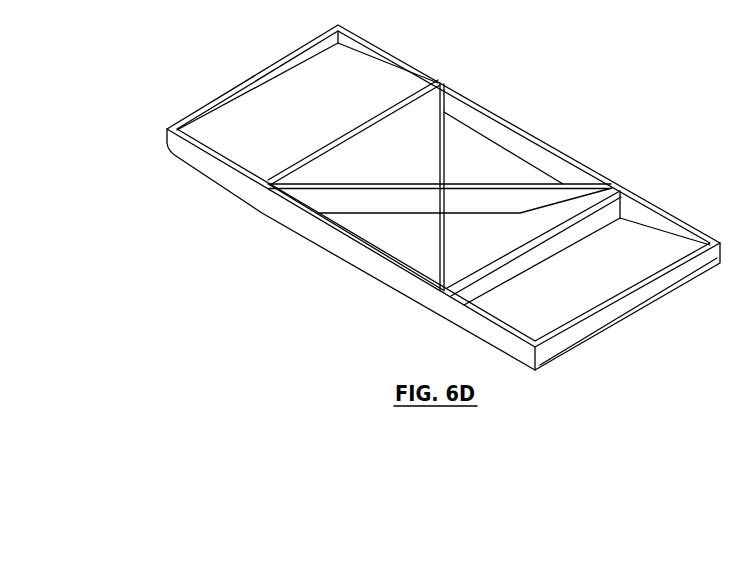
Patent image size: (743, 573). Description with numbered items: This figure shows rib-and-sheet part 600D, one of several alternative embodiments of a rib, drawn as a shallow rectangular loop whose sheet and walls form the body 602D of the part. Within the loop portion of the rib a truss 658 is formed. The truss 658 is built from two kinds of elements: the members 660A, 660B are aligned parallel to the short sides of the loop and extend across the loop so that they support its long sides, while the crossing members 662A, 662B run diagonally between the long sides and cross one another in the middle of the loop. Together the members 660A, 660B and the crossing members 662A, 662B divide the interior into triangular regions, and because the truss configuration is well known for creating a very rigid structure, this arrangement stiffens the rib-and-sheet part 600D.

The rib-and-sheet part 600D is at (543, 121).
The tray base 602D is at (297, 218).
The truss 658 is at (470, 154).
The member 660A is at (271, 182).
The member 660B is at (559, 250).
The crossing member 662A is at (427, 197).
The crossing member 662B is at (430, 142).